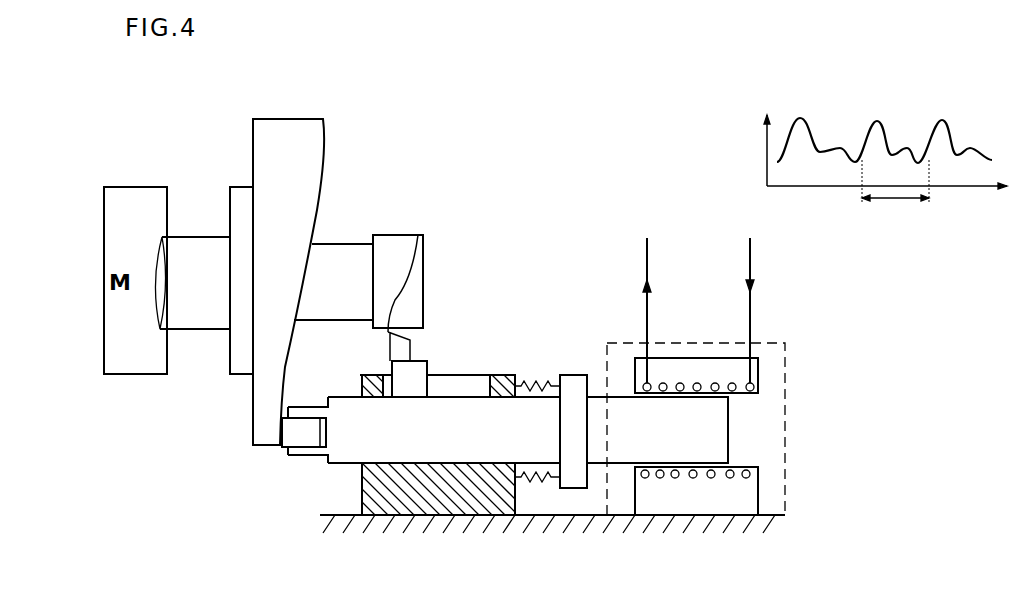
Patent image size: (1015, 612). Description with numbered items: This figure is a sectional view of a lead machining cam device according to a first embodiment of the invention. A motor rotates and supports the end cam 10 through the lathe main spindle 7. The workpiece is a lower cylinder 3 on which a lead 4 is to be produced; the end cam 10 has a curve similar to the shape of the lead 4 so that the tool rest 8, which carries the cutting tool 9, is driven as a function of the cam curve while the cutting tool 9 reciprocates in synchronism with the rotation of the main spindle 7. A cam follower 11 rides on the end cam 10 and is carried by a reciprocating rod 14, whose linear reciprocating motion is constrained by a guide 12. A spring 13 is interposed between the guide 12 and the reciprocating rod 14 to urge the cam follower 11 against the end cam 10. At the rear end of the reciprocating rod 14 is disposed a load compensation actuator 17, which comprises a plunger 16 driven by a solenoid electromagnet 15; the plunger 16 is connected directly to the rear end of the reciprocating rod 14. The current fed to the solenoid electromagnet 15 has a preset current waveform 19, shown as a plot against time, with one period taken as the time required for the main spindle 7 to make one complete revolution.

The lower cylinder 3 is at (397, 243).
The lead 4 is at (405, 278).
The main spindle 7 is at (178, 237).
The tool rest 8 is at (413, 373).
The cutting tool 9 is at (400, 338).
The end cam 10 is at (290, 125).
The cam follower 11 is at (298, 438).
The guide 12 is at (418, 497).
The spring 13 is at (540, 373).
The reciprocating rod 14 is at (450, 453).
The solenoid electromagnet 15 is at (687, 358).
The plunger 16 is at (713, 440).
The load compensation actuator 17 is at (770, 340).
The current waveform 19 is at (943, 127).